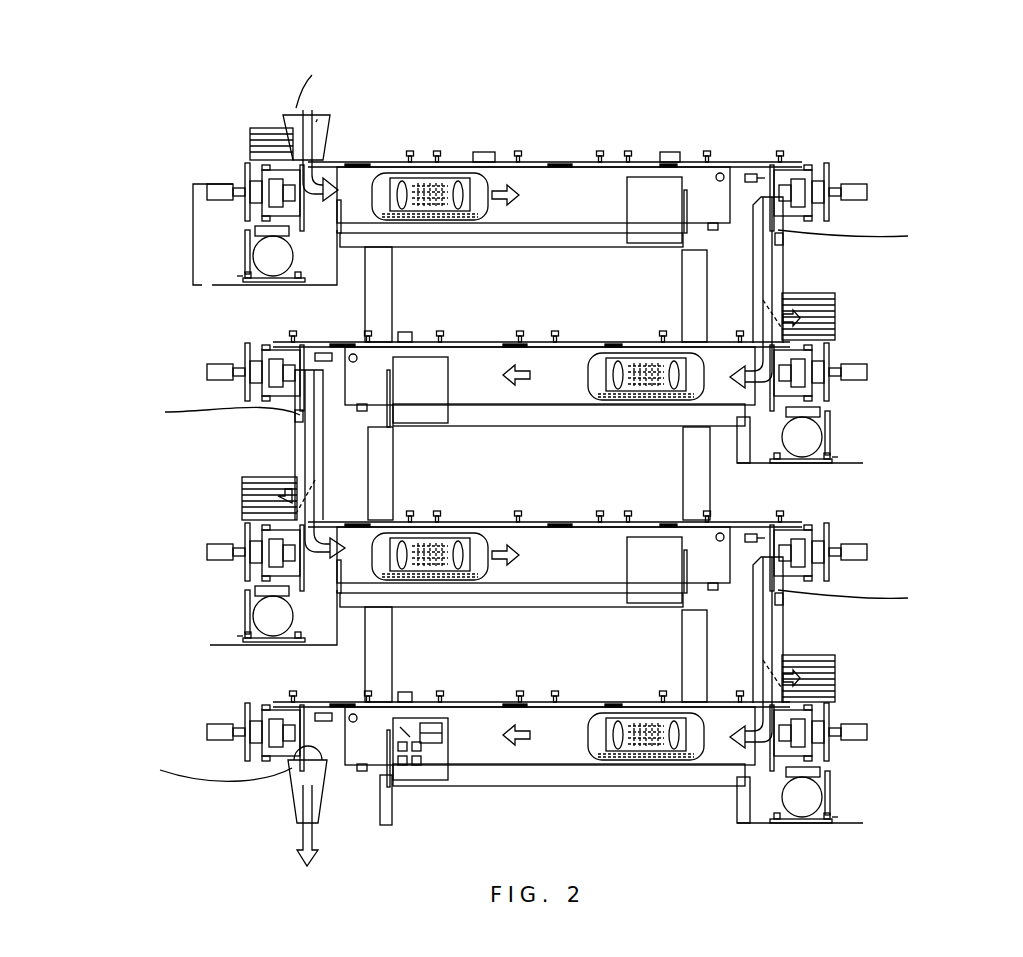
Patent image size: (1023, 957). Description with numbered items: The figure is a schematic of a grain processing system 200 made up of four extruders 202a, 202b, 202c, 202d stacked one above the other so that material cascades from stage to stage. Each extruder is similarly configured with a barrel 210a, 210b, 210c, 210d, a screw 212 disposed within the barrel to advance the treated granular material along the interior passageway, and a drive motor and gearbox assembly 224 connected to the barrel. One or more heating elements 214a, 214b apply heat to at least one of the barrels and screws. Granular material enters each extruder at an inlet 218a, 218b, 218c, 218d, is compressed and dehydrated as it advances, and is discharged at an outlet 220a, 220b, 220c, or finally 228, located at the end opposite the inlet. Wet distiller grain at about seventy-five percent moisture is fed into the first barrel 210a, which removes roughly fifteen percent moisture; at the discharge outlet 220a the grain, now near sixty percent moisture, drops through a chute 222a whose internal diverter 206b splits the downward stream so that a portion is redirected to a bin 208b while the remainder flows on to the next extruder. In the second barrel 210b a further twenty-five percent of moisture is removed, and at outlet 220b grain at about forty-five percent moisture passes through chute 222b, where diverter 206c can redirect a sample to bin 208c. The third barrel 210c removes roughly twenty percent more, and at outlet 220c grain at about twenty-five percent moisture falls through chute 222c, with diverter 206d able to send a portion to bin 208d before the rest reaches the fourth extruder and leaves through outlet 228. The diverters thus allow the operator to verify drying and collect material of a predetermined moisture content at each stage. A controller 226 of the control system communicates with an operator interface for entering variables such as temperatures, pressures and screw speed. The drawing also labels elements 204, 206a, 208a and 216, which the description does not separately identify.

The grain processing system 200 is at (747, 90).
The extruder 202a is at (722, 205).
The extruder 202b is at (760, 398).
The extruder 202c is at (722, 565).
The extruder 202d is at (723, 755).
The feed hopper 204 is at (298, 115).
The inlet conduit 206a is at (315, 150).
The internal diverter 206b is at (806, 327).
The internal diverter 206c is at (290, 508).
The internal diverter 206d is at (806, 689).
The heater 208a is at (252, 140).
The bin 208b is at (828, 295).
The bin 208c is at (250, 478).
The bin 208d is at (828, 657).
The barrel 210a is at (580, 207).
The barrel 210b is at (528, 392).
The barrel 210c is at (537, 572).
The barrel 210d is at (540, 752).
The screw 212 is at (418, 185).
The heating element 214a is at (447, 188).
The heating element 214b is at (463, 214).
The sensor 216 is at (484, 152).
The inlet 218a is at (272, 186).
The inlet 218b is at (810, 345).
The inlet 218c is at (262, 524).
The inlet 218d is at (810, 707).
The outlet 220a is at (782, 222).
The outlet 220b is at (297, 392).
The outlet 220c is at (782, 582).
The chute 222a is at (778, 242).
The chute 222b is at (300, 422).
The chute 222c is at (778, 602).
The drive motor and gearbox assembly 224 is at (193, 222).
The controller 226 is at (438, 770).
The outlet 228 is at (297, 800).